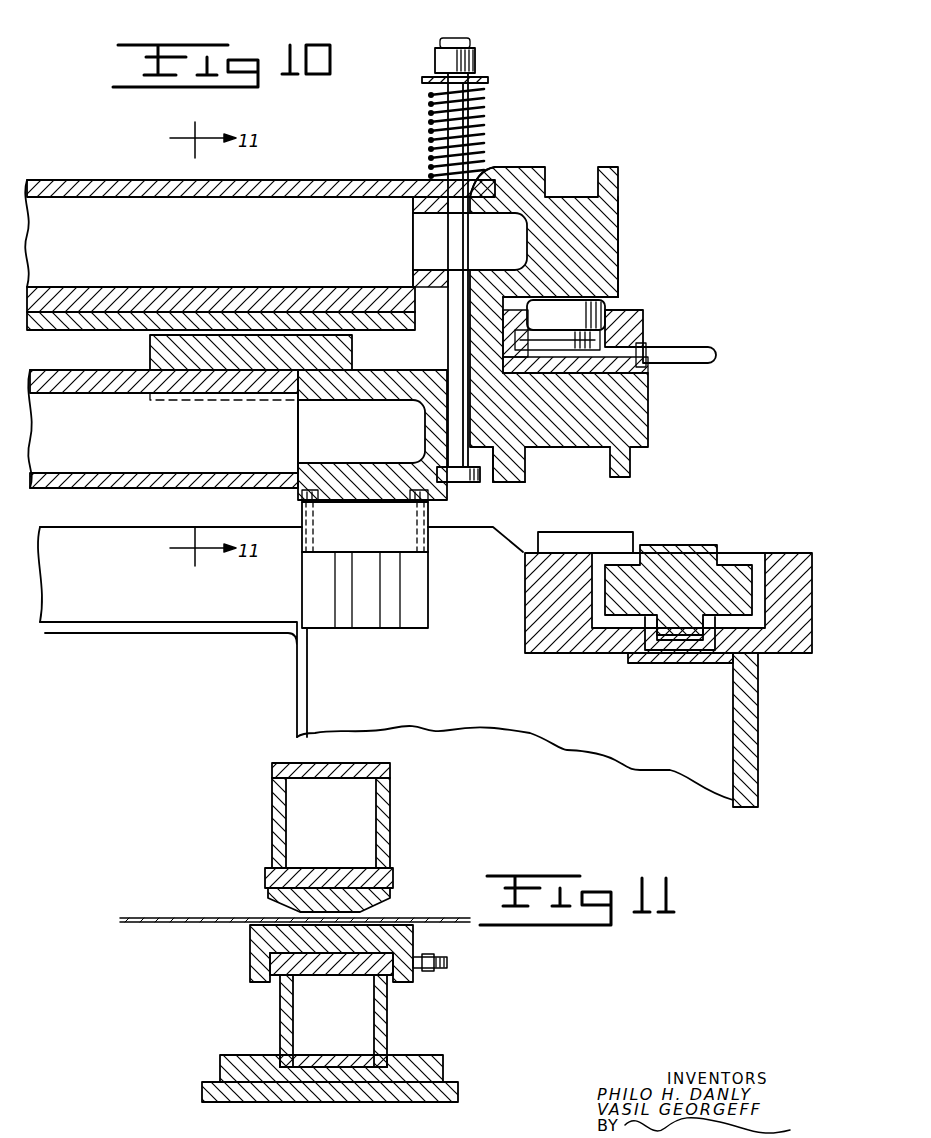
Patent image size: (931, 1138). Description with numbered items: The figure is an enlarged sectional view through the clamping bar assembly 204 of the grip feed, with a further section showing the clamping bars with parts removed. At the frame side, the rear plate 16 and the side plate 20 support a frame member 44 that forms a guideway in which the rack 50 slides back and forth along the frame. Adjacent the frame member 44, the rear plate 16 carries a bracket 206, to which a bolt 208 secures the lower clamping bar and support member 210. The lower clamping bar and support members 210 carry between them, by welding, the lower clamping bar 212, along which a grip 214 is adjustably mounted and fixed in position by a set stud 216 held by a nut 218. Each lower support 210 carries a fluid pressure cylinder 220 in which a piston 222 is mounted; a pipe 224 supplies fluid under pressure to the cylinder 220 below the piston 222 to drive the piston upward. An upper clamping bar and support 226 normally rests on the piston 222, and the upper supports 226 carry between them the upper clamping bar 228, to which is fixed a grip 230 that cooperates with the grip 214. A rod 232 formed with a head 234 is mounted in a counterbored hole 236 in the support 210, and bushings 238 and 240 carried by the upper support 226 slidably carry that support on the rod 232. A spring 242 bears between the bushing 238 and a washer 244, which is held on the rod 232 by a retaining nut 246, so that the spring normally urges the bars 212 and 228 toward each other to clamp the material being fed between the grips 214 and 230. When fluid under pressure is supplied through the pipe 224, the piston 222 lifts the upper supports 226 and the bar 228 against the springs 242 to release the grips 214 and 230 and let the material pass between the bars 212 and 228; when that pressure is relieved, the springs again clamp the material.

In FIG. 10, the rear plate 16 is at (196, 640).
In FIG. 10, the side plate 20 is at (732, 750).
In FIG. 10, the frame member 44 is at (580, 656).
In FIG. 10, the rack 50 is at (718, 547).
In FIG. 10, the clamping bar assembly 204 is at (563, 153).
In FIG. 10, the bracket 206 is at (415, 600).
In FIG. 10, the bolt 208 is at (425, 496).
In FIG. 10, the lower clamping bar and support member 210 is at (515, 470).
In FIG. 10, the lower clamping bar 212 is at (112, 486).
In FIG. 11, the lower clamping bar 212 is at (389, 1034).
In FIG. 10, the grip 214 is at (340, 353).
In FIG. 11, the grip 214 is at (415, 942).
In FIG. 11, the set stud 216 is at (448, 963).
In FIG. 11, the nut 218 is at (430, 972).
In FIG. 10, the fluid pressure cylinder 220 is at (648, 332).
In FIG. 10, the piston 222 is at (600, 303).
In FIG. 10, the pipe 224 is at (708, 342).
In FIG. 10, the upper clamping bar and support 226 is at (620, 262).
In FIG. 10, the upper clamping bar 228 is at (340, 178).
In FIG. 11, the upper clamping bar 228 is at (392, 848).
In FIG. 10, the grip 230 is at (285, 298).
In FIG. 11, the grip 230 is at (395, 904).
In FIG. 10, the rod 232 is at (488, 480).
In FIG. 10, the head 234 is at (478, 484).
In FIG. 10, the counterbored hole 236 is at (452, 416).
In FIG. 10, the bushing 238 is at (497, 178).
In FIG. 10, the bushing 240 is at (480, 270).
In FIG. 10, the spring 242 is at (480, 132).
In FIG. 10, the washer 244 is at (480, 85).
In FIG. 10, the retaining nut 246 is at (478, 62).